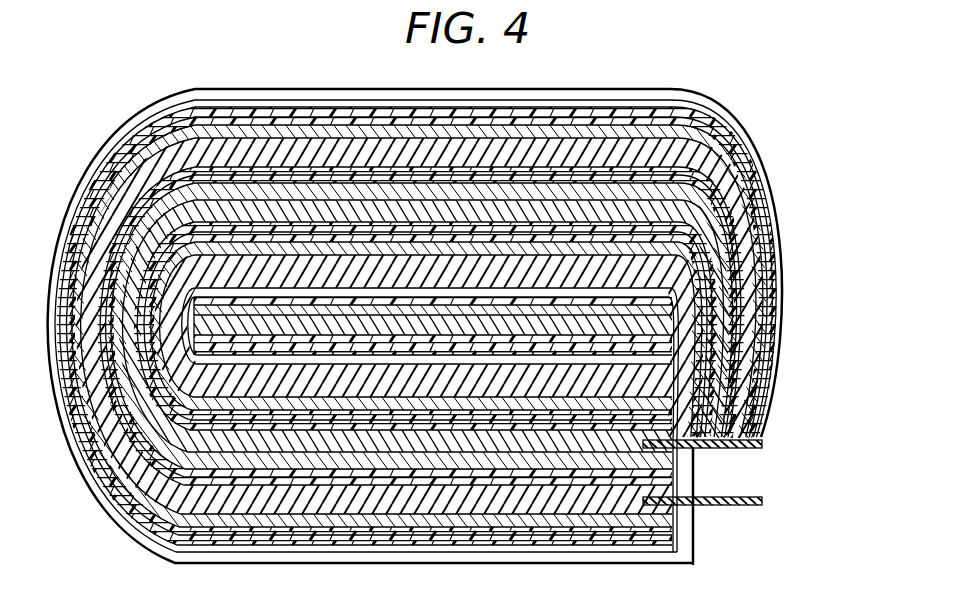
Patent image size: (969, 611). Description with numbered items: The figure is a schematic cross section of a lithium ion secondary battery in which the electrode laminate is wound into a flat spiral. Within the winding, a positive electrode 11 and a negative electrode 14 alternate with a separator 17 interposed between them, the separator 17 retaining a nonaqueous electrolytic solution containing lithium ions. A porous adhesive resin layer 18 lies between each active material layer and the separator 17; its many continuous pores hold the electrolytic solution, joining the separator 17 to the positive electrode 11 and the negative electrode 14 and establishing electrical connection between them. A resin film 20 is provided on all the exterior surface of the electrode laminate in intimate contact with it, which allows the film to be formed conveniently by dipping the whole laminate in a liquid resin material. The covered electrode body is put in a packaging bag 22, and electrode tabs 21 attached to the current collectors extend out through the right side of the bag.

The packaging bag 22 is at (757, 186).
The resin film 20 is at (760, 236).
The porous adhesive resin layer 18 is at (735, 278).
The positive electrode 11 is at (700, 300).
The separator 17 is at (678, 333).
The negative electrode 14 is at (672, 392).
The electrode tabs 21 is at (762, 500).